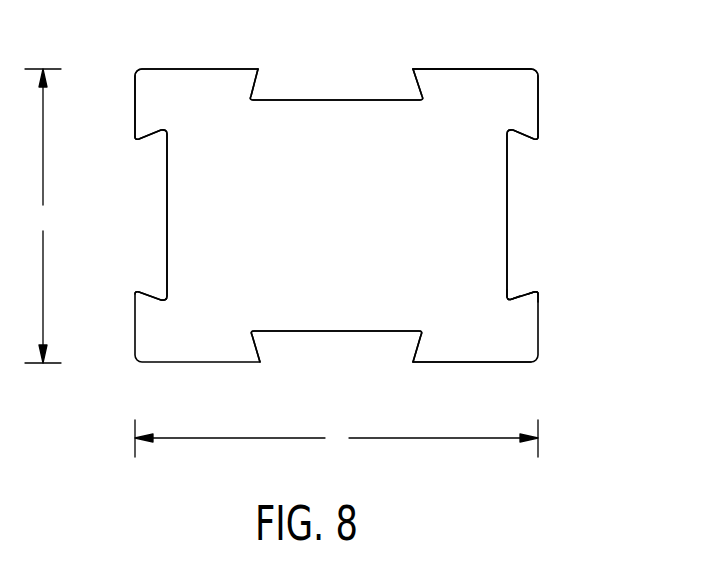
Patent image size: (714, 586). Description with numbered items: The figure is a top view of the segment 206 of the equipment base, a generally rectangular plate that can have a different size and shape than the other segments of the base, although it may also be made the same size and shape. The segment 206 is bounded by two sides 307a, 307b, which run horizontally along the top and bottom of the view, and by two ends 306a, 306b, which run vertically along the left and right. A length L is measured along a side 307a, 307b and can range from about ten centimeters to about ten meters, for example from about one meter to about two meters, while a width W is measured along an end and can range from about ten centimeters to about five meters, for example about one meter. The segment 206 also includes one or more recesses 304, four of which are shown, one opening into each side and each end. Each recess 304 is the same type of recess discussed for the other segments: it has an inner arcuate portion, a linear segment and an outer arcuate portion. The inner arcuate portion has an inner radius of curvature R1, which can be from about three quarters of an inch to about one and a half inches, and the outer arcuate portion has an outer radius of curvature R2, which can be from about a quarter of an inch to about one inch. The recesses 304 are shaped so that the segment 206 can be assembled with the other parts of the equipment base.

The segment 206 is at (355, 147).
The recesses 304 is at (295, 100).
The end 306a is at (473, 69).
The end 306b is at (472, 363).
The side 307a is at (136, 108).
The side 307b is at (538, 106).
The inner radius of curvature R1 is at (514, 296).
The outer radius of curvature R2 is at (540, 292).
The width W is at (43, 216).
The length L is at (336, 438).